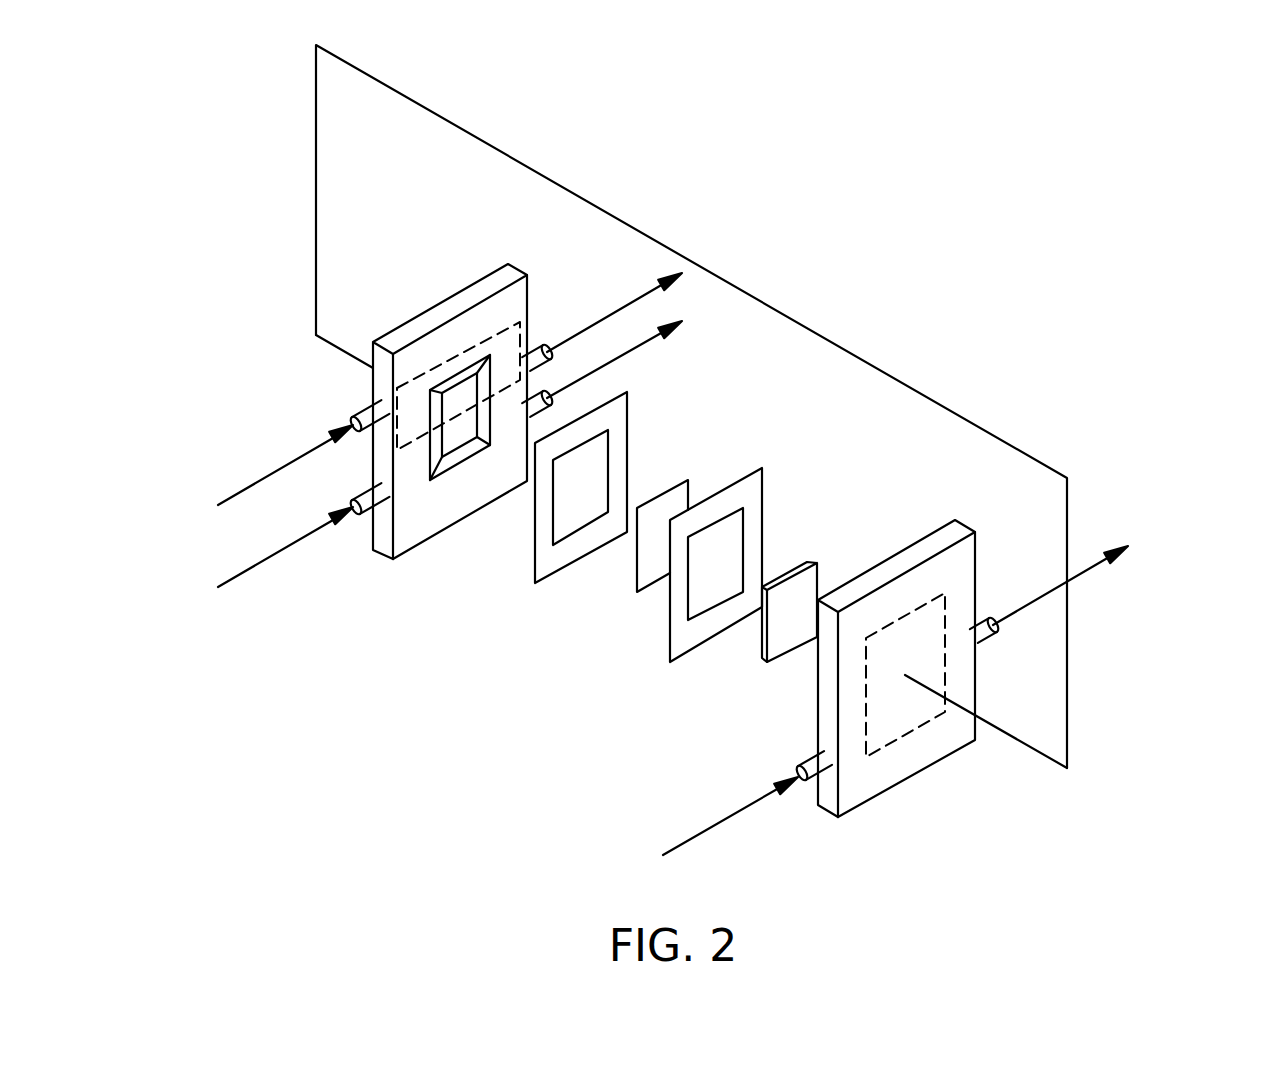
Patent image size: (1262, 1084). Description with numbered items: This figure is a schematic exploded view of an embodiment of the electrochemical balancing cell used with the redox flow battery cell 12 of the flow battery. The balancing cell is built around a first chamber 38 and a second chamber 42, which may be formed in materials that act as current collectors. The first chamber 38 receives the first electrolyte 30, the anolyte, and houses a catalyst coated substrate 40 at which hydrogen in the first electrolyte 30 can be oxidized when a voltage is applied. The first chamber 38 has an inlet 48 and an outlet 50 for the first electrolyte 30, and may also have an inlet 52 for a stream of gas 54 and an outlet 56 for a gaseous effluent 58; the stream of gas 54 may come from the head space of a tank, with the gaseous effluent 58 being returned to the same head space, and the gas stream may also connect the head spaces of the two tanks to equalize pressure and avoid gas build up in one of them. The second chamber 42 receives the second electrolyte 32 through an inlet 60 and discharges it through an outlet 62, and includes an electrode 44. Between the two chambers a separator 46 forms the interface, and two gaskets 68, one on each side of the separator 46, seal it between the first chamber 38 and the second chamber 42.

The redox flow battery cell 12 is at (1178, 288).
The first electrolyte 30 is at (248, 570).
The second electrolyte 32 is at (750, 807).
The first chamber 38 is at (405, 387).
The catalyst coated substrate 40 is at (458, 383).
The second chamber 42 is at (893, 700).
The electrode 44 is at (807, 586).
The separator 46 is at (677, 508).
The inlet 48 is at (368, 505).
The outlet 50 is at (552, 392).
The inlet 52 is at (360, 413).
The stream of gas 54 is at (245, 490).
The outlet 56 is at (542, 347).
The gaseous effluent 58 is at (617, 310).
The inlet 60 is at (830, 762).
The outlet 62 is at (990, 633).
The gaskets 68 is at (557, 555).